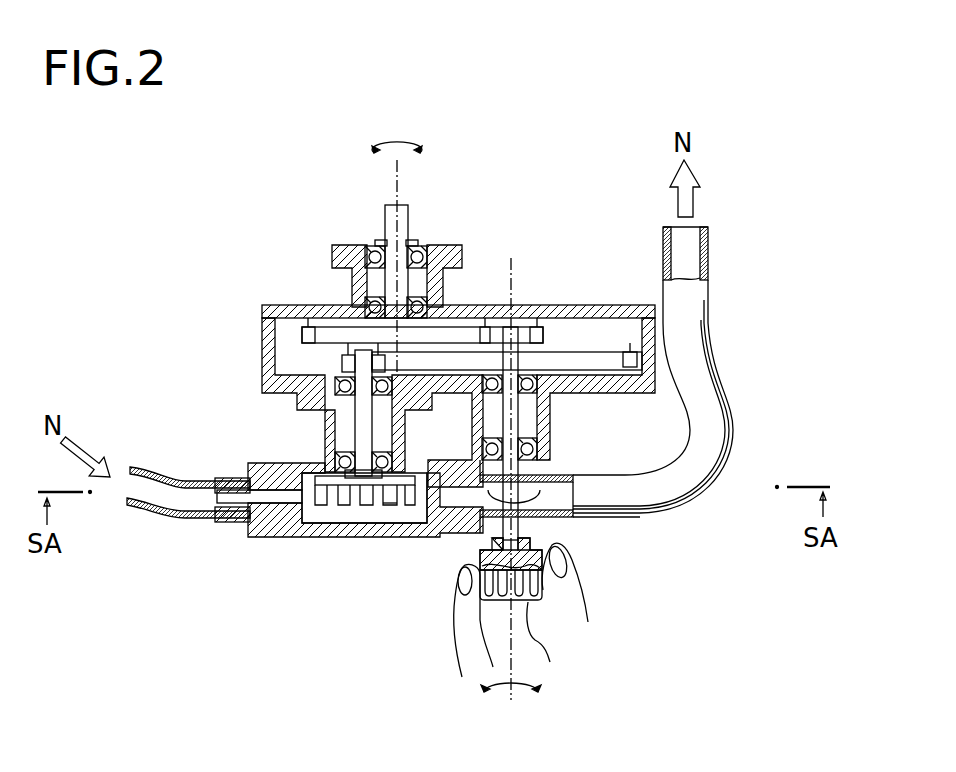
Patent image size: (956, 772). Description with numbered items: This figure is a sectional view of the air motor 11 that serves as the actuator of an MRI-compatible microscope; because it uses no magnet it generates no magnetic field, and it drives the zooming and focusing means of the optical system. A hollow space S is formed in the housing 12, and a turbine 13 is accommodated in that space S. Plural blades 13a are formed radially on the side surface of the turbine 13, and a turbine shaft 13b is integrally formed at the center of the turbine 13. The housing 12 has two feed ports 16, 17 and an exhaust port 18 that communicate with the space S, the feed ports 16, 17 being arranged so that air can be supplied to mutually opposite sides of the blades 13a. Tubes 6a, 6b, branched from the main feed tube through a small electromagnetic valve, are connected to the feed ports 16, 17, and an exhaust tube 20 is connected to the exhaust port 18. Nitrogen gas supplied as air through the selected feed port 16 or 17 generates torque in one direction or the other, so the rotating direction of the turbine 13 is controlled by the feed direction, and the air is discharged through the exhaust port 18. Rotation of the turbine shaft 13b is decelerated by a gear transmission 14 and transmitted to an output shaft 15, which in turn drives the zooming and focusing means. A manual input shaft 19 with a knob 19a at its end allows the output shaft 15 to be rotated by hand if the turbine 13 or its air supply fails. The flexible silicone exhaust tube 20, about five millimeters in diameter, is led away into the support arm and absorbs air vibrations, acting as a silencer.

The air motor 11 is at (402, 118).
The output shaft 15 is at (385, 213).
The gear transmission 14 is at (306, 236).
The turbine shaft 13b is at (357, 433).
The turbine 13 is at (357, 487).
The blades 13a is at (390, 505).
The housing 12 is at (263, 532).
The hollow space S is at (293, 516).
The tube 6a is at (171, 525).
The tube 6b is at (163, 518).
The feed port 16 is at (202, 457).
The feed port 17 is at (220, 477).
The exhaust port 18 is at (540, 477).
The manual input shaft 19 is at (520, 527).
The knob 19a is at (535, 643).
The exhaust tube 20 is at (693, 502).